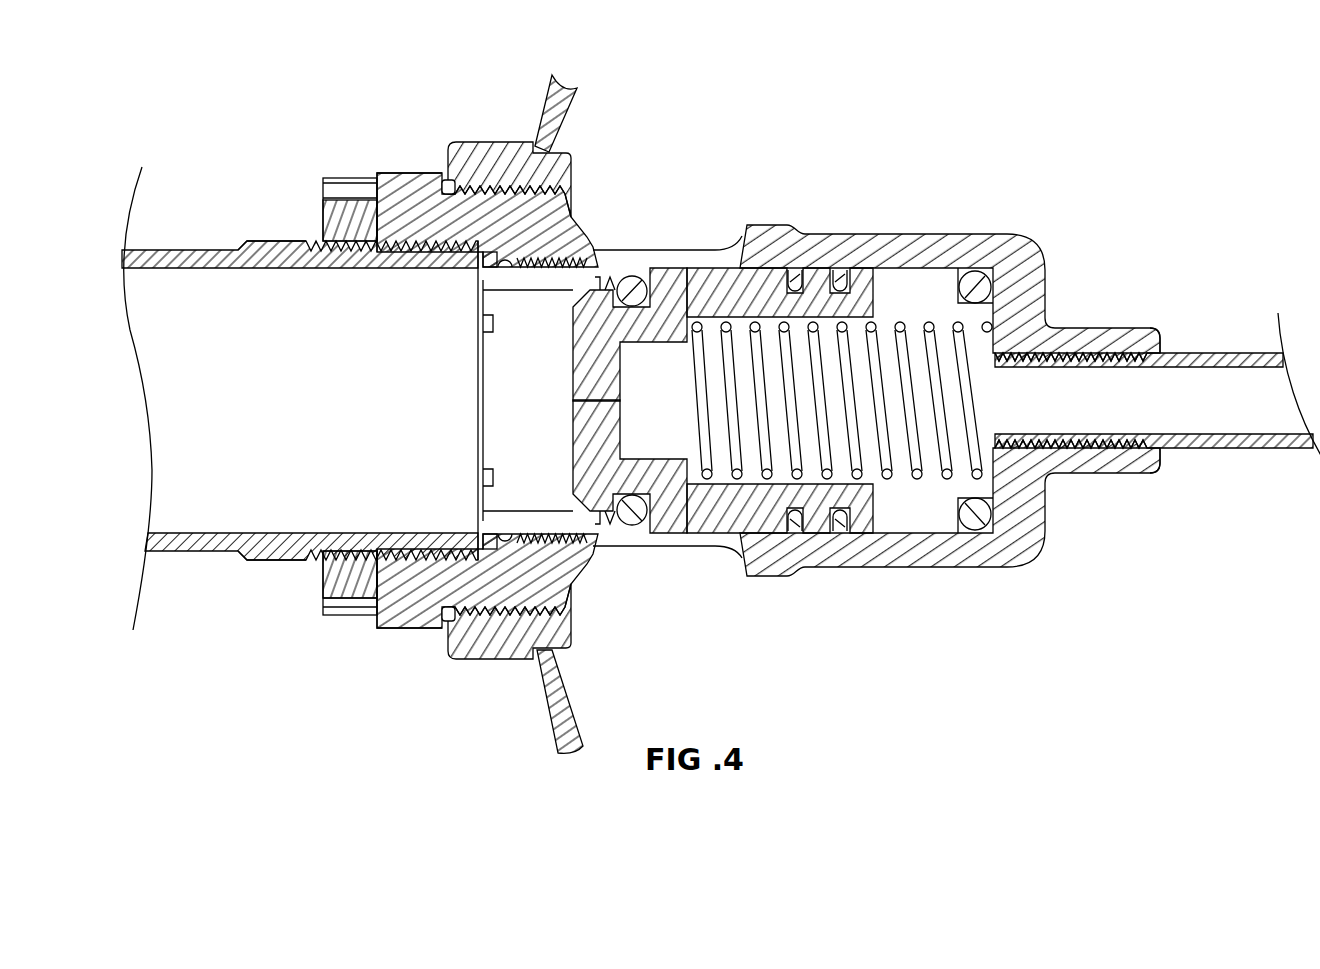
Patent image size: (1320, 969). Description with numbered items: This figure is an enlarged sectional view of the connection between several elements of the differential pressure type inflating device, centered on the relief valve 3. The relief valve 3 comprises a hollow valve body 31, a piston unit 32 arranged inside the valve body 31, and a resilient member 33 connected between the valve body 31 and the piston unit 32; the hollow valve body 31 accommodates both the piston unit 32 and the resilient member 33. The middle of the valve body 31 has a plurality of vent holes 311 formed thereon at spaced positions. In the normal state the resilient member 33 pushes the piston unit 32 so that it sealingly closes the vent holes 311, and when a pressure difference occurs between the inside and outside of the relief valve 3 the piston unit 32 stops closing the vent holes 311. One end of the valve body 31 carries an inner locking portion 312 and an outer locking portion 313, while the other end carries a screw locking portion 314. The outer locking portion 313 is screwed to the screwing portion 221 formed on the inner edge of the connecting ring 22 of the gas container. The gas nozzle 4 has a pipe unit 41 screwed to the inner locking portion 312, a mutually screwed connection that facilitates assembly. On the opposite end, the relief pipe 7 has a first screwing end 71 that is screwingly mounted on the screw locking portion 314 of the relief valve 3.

The relief valve 3 is at (746, 331).
The valve body 31 is at (918, 250).
The vent holes 311 is at (672, 265).
The inner locking portion 312 is at (457, 240).
The outer locking portion 313 is at (522, 196).
The screw locking portion 314 is at (1138, 353).
The piston unit 32 is at (752, 295).
The resilient member 33 is at (817, 343).
The connecting ring 22 is at (458, 120).
The screwing portion 221 is at (574, 148).
The gas nozzle 4 is at (186, 224).
The pipe unit 41 is at (263, 250).
The relief pipe 7 is at (1244, 323).
The first screwing end 71 is at (1063, 357).